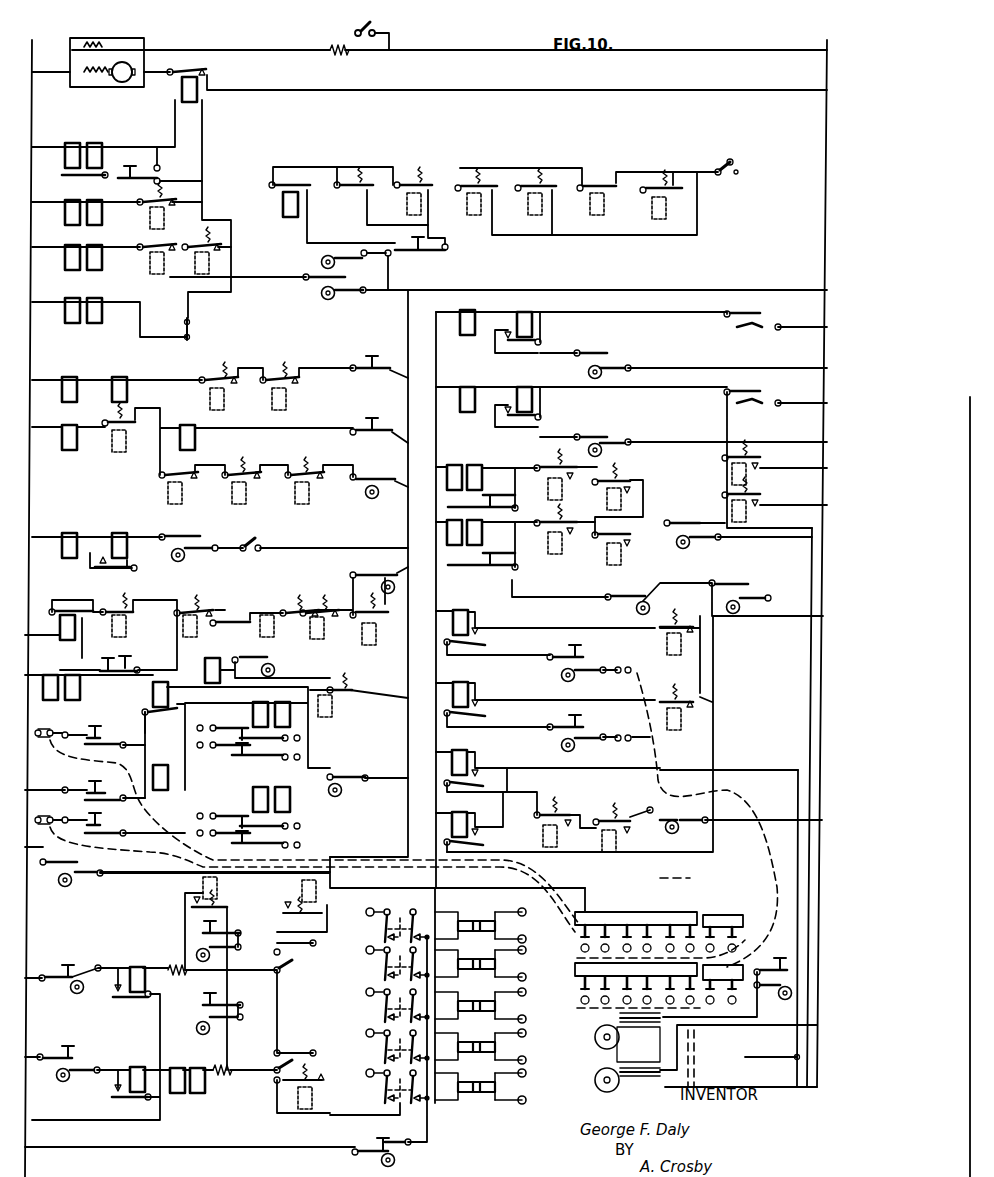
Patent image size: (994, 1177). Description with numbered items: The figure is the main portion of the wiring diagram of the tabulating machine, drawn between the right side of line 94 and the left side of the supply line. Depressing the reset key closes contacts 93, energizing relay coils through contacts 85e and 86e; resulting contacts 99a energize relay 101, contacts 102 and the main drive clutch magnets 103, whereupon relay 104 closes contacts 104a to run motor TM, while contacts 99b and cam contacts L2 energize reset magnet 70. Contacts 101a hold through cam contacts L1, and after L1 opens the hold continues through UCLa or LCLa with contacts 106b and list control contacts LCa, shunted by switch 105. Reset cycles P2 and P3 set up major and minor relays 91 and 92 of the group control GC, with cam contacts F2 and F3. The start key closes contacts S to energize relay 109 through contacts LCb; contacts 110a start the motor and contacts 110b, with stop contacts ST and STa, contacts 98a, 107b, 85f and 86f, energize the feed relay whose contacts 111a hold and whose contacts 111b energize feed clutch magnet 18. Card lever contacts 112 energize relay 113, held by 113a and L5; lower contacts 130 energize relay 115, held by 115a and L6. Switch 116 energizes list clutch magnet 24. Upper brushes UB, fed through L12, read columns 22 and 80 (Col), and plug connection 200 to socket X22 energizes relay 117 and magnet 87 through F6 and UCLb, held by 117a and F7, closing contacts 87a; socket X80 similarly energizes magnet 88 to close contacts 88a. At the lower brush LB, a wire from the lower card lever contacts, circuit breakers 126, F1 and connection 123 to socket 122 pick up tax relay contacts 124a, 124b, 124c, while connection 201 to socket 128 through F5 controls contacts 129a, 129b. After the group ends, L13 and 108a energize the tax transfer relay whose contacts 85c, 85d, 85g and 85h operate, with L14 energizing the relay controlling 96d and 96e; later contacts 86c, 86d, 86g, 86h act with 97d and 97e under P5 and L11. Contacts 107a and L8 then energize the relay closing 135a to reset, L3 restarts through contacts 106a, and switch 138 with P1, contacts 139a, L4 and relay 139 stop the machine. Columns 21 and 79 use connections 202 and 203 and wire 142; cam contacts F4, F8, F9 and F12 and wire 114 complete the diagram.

The driving motor TM is at (118, 80).
The relay 104 is at (182, 90).
The relay contacts 104a is at (212, 78).
The main drive clutch magnets 103 is at (103, 158).
The contacts 102 is at (129, 171).
The feed clutch magnet 18 is at (68, 208).
The relay contacts 111a is at (85, 608).
The relay contacts 111b is at (176, 204).
The reset magnet 70 is at (68, 253).
The relay contacts 135a is at (150, 245).
The relay contacts 99a is at (375, 182).
The relay contacts 99b is at (222, 250).
The list cam clutch magnet 24 is at (66, 306).
The switch 116 is at (190, 333).
The line 94 is at (827, 258).
The relay magnet 101 is at (284, 205).
The relay contacts 101a is at (302, 175).
The relay contacts 110a is at (416, 173).
The relay contacts 110b is at (138, 616).
The relay contacts UCLa is at (478, 182).
The relay contacts UCLb is at (359, 683).
The relay contacts LCLa is at (545, 182).
The relay contacts 106a is at (170, 472).
The relay contacts 106b is at (603, 182).
The list control contacts LCa is at (668, 182).
The relay contacts LCb is at (132, 410).
The switch 105 is at (728, 176).
The cam contacts L1 is at (345, 251).
The cam contacts L2 is at (334, 284).
The cam contacts L3 is at (390, 480).
The cam contact L4 is at (370, 570).
The cam contacts L5 is at (605, 356).
The cam contacts L6 is at (602, 437).
The cam contacts L8 is at (267, 666).
The cam contacts L11 is at (646, 600).
The cam contacts L12 is at (74, 875).
The cam contacts L13 is at (695, 537).
The cam contacts L14 is at (681, 814).
The stop key contacts ST is at (420, 256).
The stop key contacts STa is at (100, 668).
The relay contacts 98a is at (188, 600).
The relay contacts 85c is at (485, 568).
The relay contacts 85d is at (564, 808).
The relay contacts 85e is at (238, 376).
The relay contacts 85f is at (319, 599).
The relay contacts 85g is at (762, 462).
The relay contacts 85h is at (243, 473).
The relay contacts 86c is at (485, 497).
The relay contacts 86d is at (618, 812).
The relay contacts 86e is at (279, 365).
The relay contacts 86f is at (369, 598).
The relay contacts 86g is at (762, 500).
The relay contacts 86h is at (306, 463).
The reset key contacts 93 is at (370, 375).
The relay magnet 109 is at (195, 443).
The start key contacts S is at (368, 440).
The relay magnet 139 is at (125, 545).
The relay contacts 139a is at (92, 570).
The cam contact P1 is at (190, 540).
The switch 138 is at (250, 552).
The relay contacts 107a is at (290, 600).
The relay contacts 107b is at (238, 626).
The relay magnet 117 is at (153, 700).
The relay contacts 117a is at (178, 705).
The relay magnet 87 is at (290, 715).
The relay contacts 87a is at (223, 728).
The relay magnet 88 is at (290, 800).
The relay contacts 88a is at (223, 815).
The plug socket X22 is at (51, 722).
The plug socket X80 is at (50, 811).
The cam contacts F1 is at (773, 985).
The cam contacts F2 is at (205, 935).
The cam contacts F3 is at (205, 1005).
The cam contacts F4 is at (348, 775).
The cam contacts F5 is at (576, 732).
The cam contacts F6 is at (578, 664).
The cam contacts F7 is at (94, 785).
The cam contacts F8 is at (97, 733).
The cam contacts F9 is at (101, 822).
The cam contacts F12 is at (380, 1148).
The wire 114 is at (135, 847).
The plug connection 200 is at (385, 868).
The plug connection 201 is at (768, 853).
The relay magnet 113 is at (540, 318).
The relay contacts 113a is at (505, 342).
The relay magnet 115 is at (532, 400).
The relay contacts 115a is at (505, 420).
The upper card lever contacts 112 is at (757, 318).
The lower card lever contacts 130 is at (758, 397).
The relay contacts 129a is at (478, 713).
The relay contacts 129b is at (575, 464).
The relay contacts 124a is at (478, 640).
The relay contacts 124b is at (632, 480).
The relay contacts 124c is at (551, 516).
The relay contacts 108a is at (632, 543).
The cam contacts P5 is at (742, 599).
The relay contacts 96d is at (670, 620).
The relay contacts 96e is at (482, 778).
The relay contacts 97d is at (693, 700).
The relay contacts 97e is at (480, 845).
The plug socket 122 is at (628, 666).
The plug socket 128 is at (622, 748).
The plug connection 123 is at (707, 878).
The cam contacts P2 is at (60, 972).
The cam contacts P3 is at (78, 1060).
The major holding relay 91 is at (142, 968).
The minor holding relay 92 is at (138, 1068).
The group control mechanism GC is at (299, 994).
The column Col is at (655, 949).
The column 21 is at (647, 901).
The column 22 is at (669, 901).
The column 79 is at (723, 911).
The column 80 is at (734, 905).
The upper brushes UB is at (740, 930).
The lower brush LB is at (735, 962).
The plug connection 202 is at (612, 1010).
The circuit breakers 126 is at (635, 1062).
The plug connection 203 is at (694, 1060).
The wire 142 is at (795, 1057).